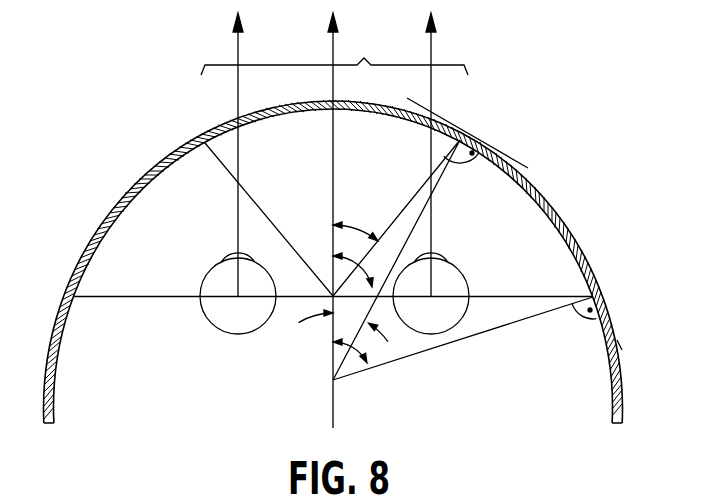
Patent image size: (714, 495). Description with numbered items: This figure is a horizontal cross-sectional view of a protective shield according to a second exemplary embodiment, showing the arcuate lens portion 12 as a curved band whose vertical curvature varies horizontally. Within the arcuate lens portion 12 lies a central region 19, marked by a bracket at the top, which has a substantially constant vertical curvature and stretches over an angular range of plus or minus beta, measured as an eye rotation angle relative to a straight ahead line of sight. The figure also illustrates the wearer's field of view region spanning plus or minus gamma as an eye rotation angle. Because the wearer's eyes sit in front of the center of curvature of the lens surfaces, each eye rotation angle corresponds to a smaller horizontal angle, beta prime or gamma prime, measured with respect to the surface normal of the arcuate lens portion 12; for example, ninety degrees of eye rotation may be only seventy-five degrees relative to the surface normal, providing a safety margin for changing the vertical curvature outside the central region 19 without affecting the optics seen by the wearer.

The arcuate lens portion 12 is at (166, 155).
The central region 19 is at (334, 220).